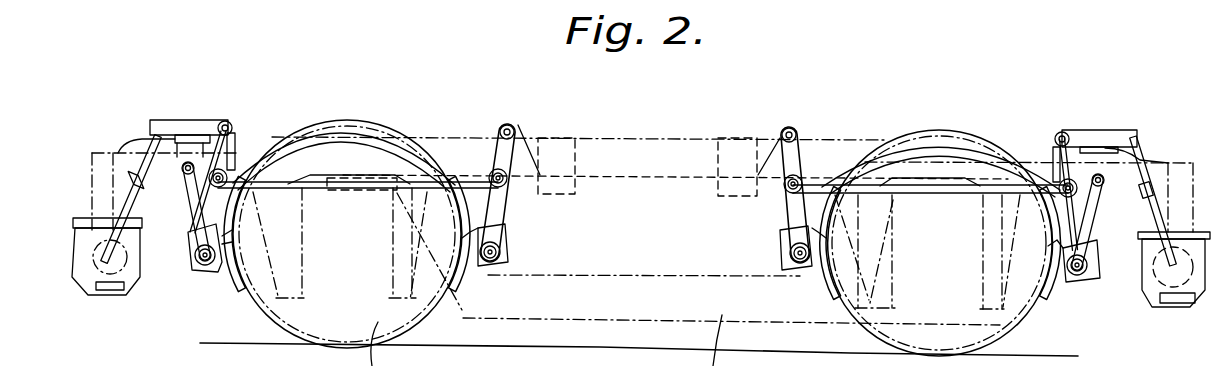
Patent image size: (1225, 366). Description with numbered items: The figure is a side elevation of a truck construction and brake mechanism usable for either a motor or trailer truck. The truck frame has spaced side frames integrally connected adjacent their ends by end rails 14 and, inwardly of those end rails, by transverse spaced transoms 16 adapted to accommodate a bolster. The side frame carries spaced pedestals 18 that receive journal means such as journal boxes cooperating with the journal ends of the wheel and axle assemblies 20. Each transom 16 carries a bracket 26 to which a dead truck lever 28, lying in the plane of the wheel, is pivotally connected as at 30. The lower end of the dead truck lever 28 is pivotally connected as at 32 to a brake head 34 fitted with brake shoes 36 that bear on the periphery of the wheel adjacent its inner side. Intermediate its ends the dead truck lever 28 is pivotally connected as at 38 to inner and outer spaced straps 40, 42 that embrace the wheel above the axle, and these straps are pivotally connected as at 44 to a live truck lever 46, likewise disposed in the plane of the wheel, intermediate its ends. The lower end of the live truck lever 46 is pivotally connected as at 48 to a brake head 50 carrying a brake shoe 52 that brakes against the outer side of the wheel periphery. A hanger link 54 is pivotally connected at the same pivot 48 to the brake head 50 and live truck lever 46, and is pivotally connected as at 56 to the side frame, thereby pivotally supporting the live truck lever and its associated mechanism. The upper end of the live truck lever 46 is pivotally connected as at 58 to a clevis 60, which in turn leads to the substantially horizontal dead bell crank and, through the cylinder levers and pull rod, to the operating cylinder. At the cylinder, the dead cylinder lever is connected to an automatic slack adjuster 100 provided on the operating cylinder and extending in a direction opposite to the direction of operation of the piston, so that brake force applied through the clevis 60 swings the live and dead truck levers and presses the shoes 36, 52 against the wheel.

The end rails 14 is at (1183, 207).
The transoms 16 is at (558, 150).
The pedestals 18 is at (295, 289).
The wheel and axle assemblies 20 is at (988, 327).
The bracket 26 is at (519, 125).
The dead truck lever 28 is at (497, 152).
The pivot 30 is at (506, 126).
The pivot 32 is at (502, 246).
The brake head 34 is at (473, 279).
The brake shoes 36 is at (447, 292).
The pivot 38 is at (508, 188).
The inner strap 40 is at (308, 190).
The outer strap 42 is at (360, 145).
The pivot 44 is at (222, 172).
The live truck lever 46 is at (221, 166).
The pivot 48 is at (212, 258).
The brake head 50 is at (220, 273).
The brake shoe 52 is at (248, 293).
The hanger link 54 is at (190, 197).
The pivot 56 is at (182, 178).
The pivot 58 is at (231, 122).
The clevis 60 is at (218, 124).
The automatic slack adjuster 100 is at (1178, 293).